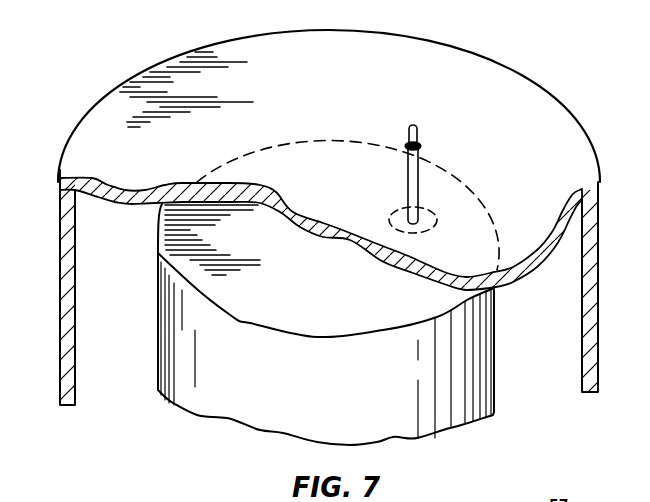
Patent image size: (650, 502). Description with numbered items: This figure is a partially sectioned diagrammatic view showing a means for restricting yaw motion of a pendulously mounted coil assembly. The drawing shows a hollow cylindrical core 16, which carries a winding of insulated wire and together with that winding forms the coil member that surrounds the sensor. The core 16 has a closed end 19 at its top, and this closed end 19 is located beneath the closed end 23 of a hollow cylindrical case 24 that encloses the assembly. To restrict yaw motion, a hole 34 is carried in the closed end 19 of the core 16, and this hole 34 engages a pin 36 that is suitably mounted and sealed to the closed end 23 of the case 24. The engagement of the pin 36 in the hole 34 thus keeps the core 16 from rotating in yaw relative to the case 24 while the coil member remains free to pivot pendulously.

The hollow cylindrical core 16 is at (495, 387).
The closed end 19 is at (333, 283).
The closed end 23 is at (330, 86).
The hollow cylindrical case 24 is at (568, 111).
The hole 34 is at (438, 232).
The pin 36 is at (421, 139).